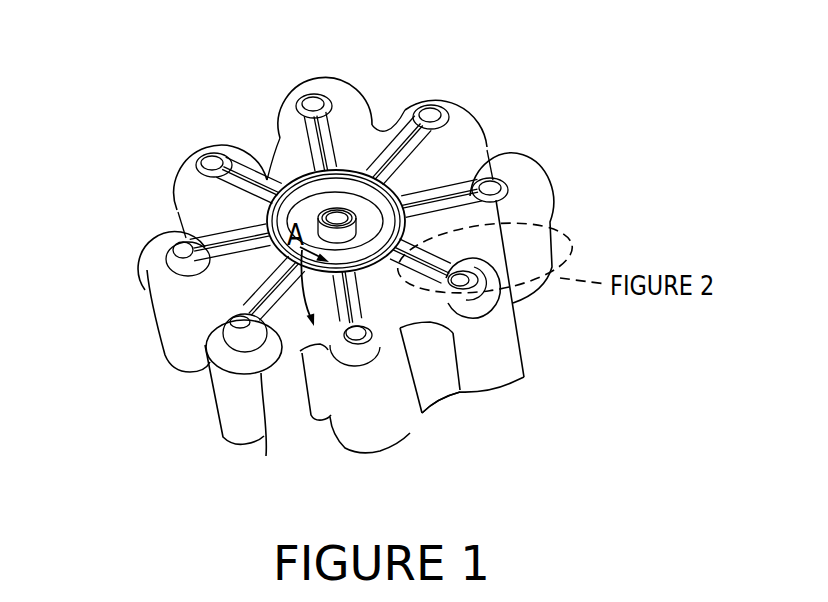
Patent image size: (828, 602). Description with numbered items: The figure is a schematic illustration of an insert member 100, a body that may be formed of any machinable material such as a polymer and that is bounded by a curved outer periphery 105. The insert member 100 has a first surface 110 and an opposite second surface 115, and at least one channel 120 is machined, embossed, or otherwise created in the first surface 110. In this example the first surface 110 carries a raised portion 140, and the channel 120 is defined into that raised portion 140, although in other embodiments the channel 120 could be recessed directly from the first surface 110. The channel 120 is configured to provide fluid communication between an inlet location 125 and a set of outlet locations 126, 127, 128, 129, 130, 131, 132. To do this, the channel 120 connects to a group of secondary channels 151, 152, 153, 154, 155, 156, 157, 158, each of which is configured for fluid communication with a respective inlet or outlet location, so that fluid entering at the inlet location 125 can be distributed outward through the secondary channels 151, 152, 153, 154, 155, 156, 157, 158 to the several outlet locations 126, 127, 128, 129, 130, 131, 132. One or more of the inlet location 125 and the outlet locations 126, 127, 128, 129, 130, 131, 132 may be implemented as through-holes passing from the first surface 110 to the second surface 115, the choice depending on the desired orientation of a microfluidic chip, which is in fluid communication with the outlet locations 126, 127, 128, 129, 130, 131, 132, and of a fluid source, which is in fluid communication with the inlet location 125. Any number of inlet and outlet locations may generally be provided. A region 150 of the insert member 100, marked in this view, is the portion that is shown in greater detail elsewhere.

The insert member 100 is at (645, 425).
The curved outer periphery 105 is at (505, 343).
The first surface 110 is at (364, 120).
The second surface 115 is at (455, 412).
The channel 120 is at (266, 203).
The inlet location 125 is at (313, 98).
The outlet location 126 is at (442, 104).
The outlet location 127 is at (493, 189).
The outlet location 128 is at (470, 258).
The outlet location 129 is at (331, 350).
The outlet location 130 is at (223, 325).
The outlet location 131 is at (165, 251).
The outlet location 132 is at (213, 153).
The raised portion 140 is at (447, 177).
The region 150 is at (450, 303).
The secondary channel 151 is at (288, 112).
The secondary channel 152 is at (402, 117).
The secondary channel 153 is at (450, 193).
The secondary channel 154 is at (433, 257).
The secondary channel 155 is at (368, 301).
The secondary channel 156 is at (266, 450).
The secondary channel 157 is at (193, 234).
The secondary channel 158 is at (248, 177).